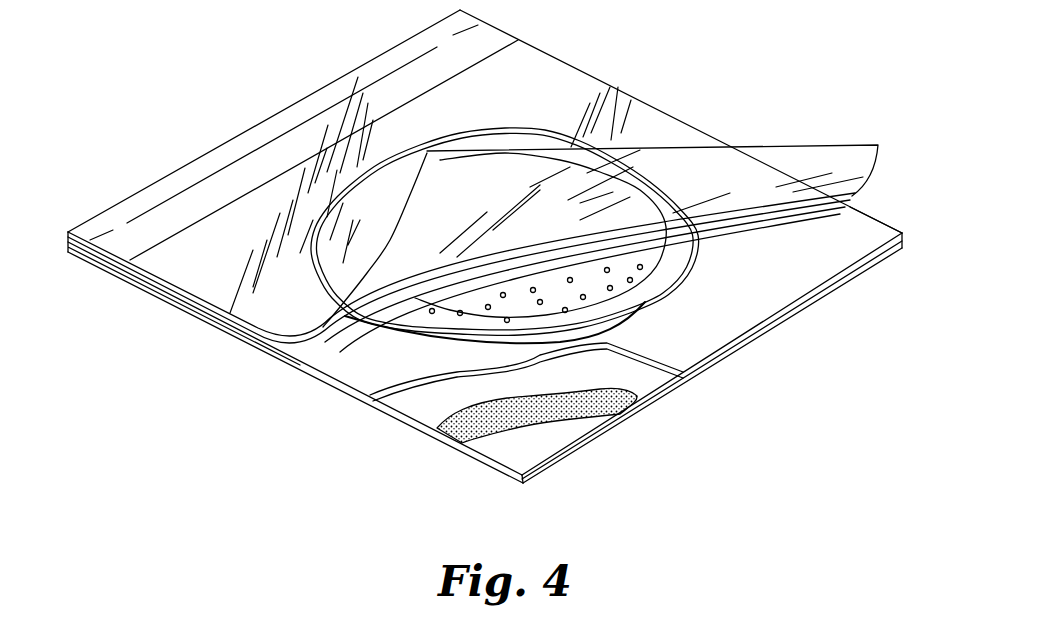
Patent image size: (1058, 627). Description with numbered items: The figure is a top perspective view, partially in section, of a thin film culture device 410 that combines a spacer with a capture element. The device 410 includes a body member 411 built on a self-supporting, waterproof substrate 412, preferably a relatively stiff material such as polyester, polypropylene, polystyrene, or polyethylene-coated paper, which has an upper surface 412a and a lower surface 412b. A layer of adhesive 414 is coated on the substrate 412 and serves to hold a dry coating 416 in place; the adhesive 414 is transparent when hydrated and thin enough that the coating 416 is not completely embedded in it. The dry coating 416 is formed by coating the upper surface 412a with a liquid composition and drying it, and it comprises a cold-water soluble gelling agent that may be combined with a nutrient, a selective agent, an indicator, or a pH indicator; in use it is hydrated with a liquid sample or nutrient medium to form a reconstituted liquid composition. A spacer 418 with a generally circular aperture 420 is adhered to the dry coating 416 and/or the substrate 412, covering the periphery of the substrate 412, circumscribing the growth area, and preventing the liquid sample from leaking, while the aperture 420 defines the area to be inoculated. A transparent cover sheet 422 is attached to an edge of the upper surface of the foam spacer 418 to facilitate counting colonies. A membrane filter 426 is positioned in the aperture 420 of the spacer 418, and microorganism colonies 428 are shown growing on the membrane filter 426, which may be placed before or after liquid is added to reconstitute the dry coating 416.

The thin film culture device 410 is at (740, 100).
The body member 411 is at (126, 294).
The substrate 412 is at (551, 481).
The upper surface 412a is at (553, 440).
The lower surface 412b is at (508, 476).
The layer of adhesive 414 is at (448, 424).
The dry coating 416 is at (648, 382).
The spacer 418 is at (832, 259).
The aperture 420 is at (685, 258).
The cover sheet 422 is at (858, 160).
The membrane filter 426 is at (648, 280).
The microorganism colonies 428 is at (505, 320).